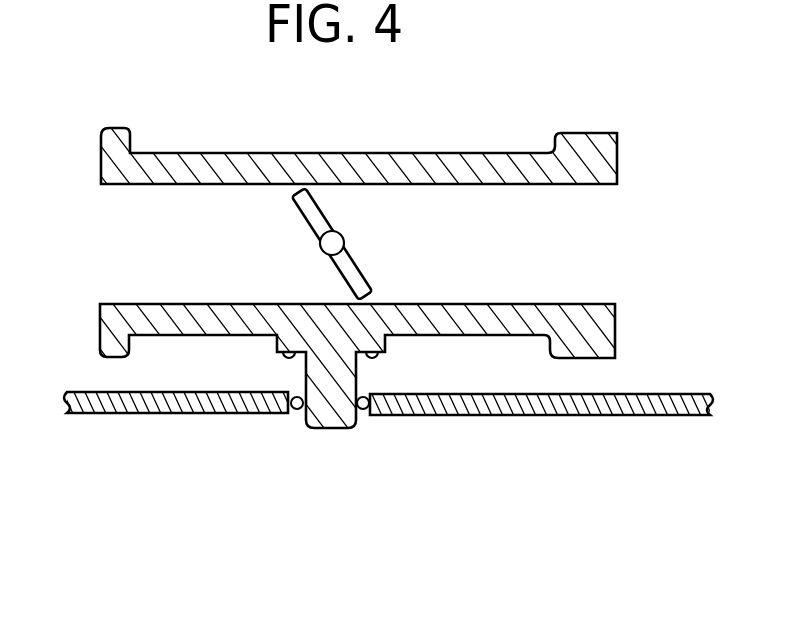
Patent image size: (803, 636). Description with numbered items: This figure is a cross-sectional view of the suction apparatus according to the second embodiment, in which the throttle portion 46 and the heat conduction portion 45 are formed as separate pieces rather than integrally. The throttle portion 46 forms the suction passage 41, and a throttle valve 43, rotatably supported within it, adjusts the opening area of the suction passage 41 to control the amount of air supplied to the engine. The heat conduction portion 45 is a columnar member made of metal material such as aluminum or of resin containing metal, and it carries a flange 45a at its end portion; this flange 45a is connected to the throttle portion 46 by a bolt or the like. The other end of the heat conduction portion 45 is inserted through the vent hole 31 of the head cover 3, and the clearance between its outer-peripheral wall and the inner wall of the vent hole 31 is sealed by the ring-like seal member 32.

The head cover 3 is at (439, 410).
The vent hole 31 is at (297, 412).
The seal member 32 is at (363, 410).
The suction passage 41 is at (355, 143).
The throttle valve 43 is at (313, 215).
The heat conduction portion 45 is at (370, 445).
The flange 45a is at (287, 340).
The throttle portion 46 is at (470, 170).